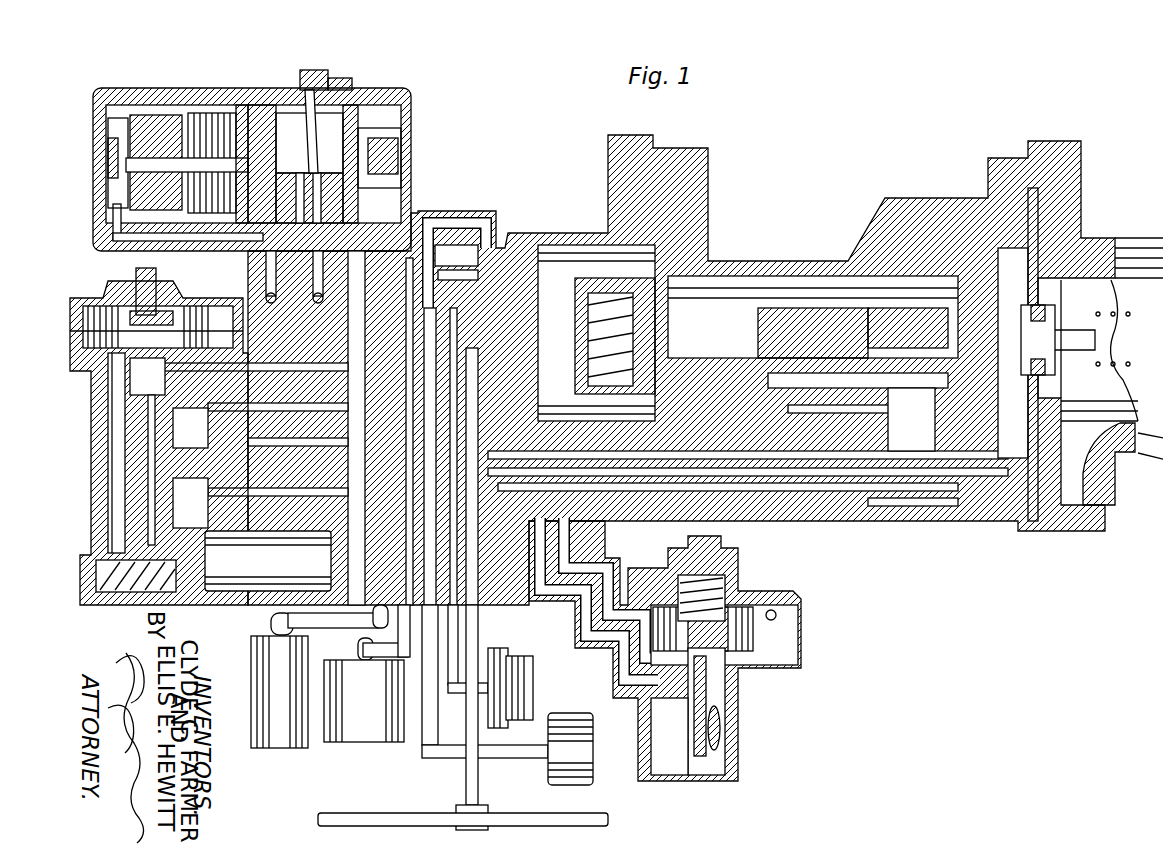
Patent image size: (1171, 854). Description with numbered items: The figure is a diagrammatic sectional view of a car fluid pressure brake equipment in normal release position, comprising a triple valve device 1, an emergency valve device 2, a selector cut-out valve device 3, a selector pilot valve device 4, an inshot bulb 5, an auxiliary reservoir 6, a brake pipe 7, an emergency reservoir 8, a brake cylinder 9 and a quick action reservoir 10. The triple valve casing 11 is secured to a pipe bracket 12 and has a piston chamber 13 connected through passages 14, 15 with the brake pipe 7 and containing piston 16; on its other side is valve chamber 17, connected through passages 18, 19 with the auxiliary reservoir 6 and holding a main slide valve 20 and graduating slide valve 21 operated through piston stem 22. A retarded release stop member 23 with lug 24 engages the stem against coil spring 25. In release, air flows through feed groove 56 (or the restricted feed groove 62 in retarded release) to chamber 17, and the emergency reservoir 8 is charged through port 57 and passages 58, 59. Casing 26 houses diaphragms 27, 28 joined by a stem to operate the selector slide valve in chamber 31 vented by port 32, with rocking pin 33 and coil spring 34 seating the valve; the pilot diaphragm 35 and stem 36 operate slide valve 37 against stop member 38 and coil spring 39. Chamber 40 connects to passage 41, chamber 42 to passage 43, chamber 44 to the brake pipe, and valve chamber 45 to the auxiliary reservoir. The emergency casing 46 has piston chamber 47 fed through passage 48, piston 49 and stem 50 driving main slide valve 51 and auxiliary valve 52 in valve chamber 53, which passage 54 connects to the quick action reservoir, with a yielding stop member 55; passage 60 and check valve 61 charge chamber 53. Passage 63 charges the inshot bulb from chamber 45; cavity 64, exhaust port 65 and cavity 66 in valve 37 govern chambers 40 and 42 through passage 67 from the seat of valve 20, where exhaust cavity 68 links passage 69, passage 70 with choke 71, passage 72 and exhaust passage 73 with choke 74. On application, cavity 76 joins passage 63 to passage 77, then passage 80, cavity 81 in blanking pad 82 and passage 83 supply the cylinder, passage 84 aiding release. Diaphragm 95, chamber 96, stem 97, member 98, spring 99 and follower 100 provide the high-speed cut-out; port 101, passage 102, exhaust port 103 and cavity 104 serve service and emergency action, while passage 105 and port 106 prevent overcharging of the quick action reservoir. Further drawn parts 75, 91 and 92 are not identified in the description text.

The triple valve device 1 is at (898, 190).
The emergency valve device 2 is at (742, 690).
The selector cut-out valve device 3 is at (340, 90).
The selector pilot valve device 4 is at (82, 470).
The inshot bulb 5 is at (232, 580).
The auxiliary reservoir 6 is at (580, 744).
The brake pipe 7 is at (463, 775).
The emergency reservoir 8 is at (330, 722).
The brake cylinder 9 is at (505, 645).
The quick action reservoir 10 is at (245, 660).
The casing 11 is at (770, 255).
The pipe bracket 12 is at (505, 232).
The piston chamber 13 is at (1070, 235).
The passage 14 is at (965, 500).
The passage 15 is at (487, 423).
The piston 16 is at (1060, 200).
The valve chamber 17 is at (805, 275).
The passage 18 is at (520, 352).
The passage 19 is at (444, 398).
The main slide valve 20 is at (695, 345).
The graduating slide valve 21 is at (870, 325).
The piston stem 22 is at (720, 300).
The retarded release stop member 23 is at (668, 268).
The lug 24 is at (700, 365).
The coil spring 25 is at (567, 370).
The casing 26 is at (252, 277).
The flexible diaphragm 27 is at (258, 100).
The flexible diaphragm 28 is at (403, 112).
The valve chamber 31 is at (305, 95).
The port 32 is at (278, 90).
The rocking pin 33 is at (318, 100).
The coil spring 34 is at (390, 95).
The flexible diaphragm 35 is at (85, 292).
The stem 36 is at (100, 415).
The slide valve 37 is at (125, 440).
The stop member 38 is at (80, 560).
The coil spring 39 is at (102, 590).
The chamber 40 is at (387, 155).
The passage 41 is at (380, 220).
The chamber 42 is at (234, 100).
The passage 43 is at (180, 243).
The chamber 44 is at (172, 305).
The valve chamber 45 is at (90, 437).
The casing 46 is at (660, 775).
The piston chamber 47 is at (740, 605).
The passage 48 is at (598, 545).
The piston 49 is at (770, 590).
The stem 50 is at (795, 645).
The main slide valve 51 is at (770, 680).
The auxiliary valve 52 is at (720, 740).
The valve chamber 53 is at (725, 757).
The passage 54 is at (383, 570).
The yielding stop member 55 is at (735, 560).
The feed groove 56 is at (973, 190).
The port 57 is at (880, 345).
The passage 58 is at (880, 415).
The passage 59 is at (100, 222).
The passage 60 is at (790, 625).
The check valve 61 is at (790, 605).
The feed groove 62 is at (955, 445).
The passage 63 is at (229, 408).
The cavity 64 is at (145, 470).
The exhaust port 65 is at (225, 503).
The cavity 66 is at (140, 490).
The passage 67 is at (785, 455).
The exhaust cavity 68 is at (832, 363).
The passage 69 is at (445, 318).
The passage 70 is at (528, 283).
The choke 71 is at (493, 222).
The passage 72 is at (690, 405).
The exhaust passage 73 is at (848, 440).
The choke 74 is at (215, 200).
The piston 75 is at (740, 345).
The cavity 76 is at (146, 374).
The passage 77 is at (302, 403).
The passage 80 is at (312, 206).
The cavity 81 is at (450, 205).
The blanking pad 82 is at (470, 210).
The passage 83 is at (310, 230).
The passage 84 is at (304, 325).
The port 91 is at (560, 228).
The valve 92 is at (445, 253).
The flexible diaphragm 95 is at (98, 100).
The chamber 96 is at (105, 110).
The stem 97 is at (200, 105).
The member 98 is at (135, 105).
The spring 99 is at (205, 110).
The follower 100 is at (150, 100).
The port 101 is at (700, 770).
The passage 102 is at (500, 580).
The exhaust port 103 is at (666, 750).
The cavity 104 is at (740, 712).
The passage 105 is at (383, 408).
The port 106 is at (193, 440).